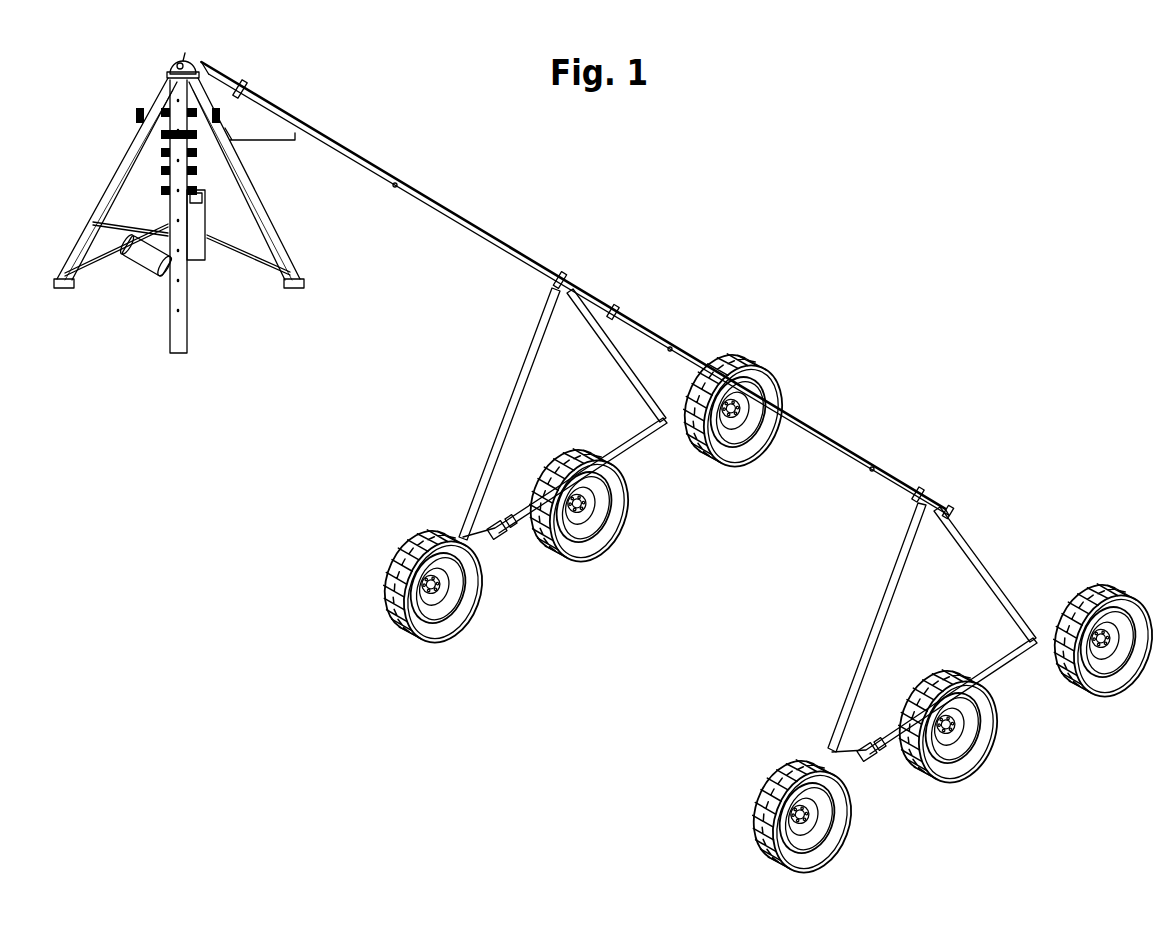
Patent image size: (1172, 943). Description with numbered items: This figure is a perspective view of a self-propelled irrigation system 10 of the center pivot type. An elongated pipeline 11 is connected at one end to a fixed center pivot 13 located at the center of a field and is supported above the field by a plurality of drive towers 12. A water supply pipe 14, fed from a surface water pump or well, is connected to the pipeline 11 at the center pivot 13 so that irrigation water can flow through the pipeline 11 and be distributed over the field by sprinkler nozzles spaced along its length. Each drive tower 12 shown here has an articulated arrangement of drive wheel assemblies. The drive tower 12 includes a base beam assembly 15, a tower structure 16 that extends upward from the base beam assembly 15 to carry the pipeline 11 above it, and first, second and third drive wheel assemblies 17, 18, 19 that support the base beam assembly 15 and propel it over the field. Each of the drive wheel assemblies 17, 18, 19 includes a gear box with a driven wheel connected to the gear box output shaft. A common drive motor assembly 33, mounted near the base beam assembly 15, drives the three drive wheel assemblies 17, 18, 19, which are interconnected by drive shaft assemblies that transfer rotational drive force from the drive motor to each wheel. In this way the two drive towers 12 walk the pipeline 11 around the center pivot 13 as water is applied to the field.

The self-propelled irrigation system 10 is at (295, 515).
The elongated pipeline 11 is at (425, 197).
The drive tower 12 is at (493, 432).
The fixed center pivot 13 is at (183, 72).
The water supply pipe 14 is at (140, 258).
The base beam assembly 15 is at (632, 435).
The tower structure 16 is at (530, 350).
The first drive wheel assembly 17 is at (387, 627).
The second drive wheel assembly 18 is at (762, 375).
The third drive wheel assembly 19 is at (589, 548).
The common drive motor assembly 33 is at (500, 540).